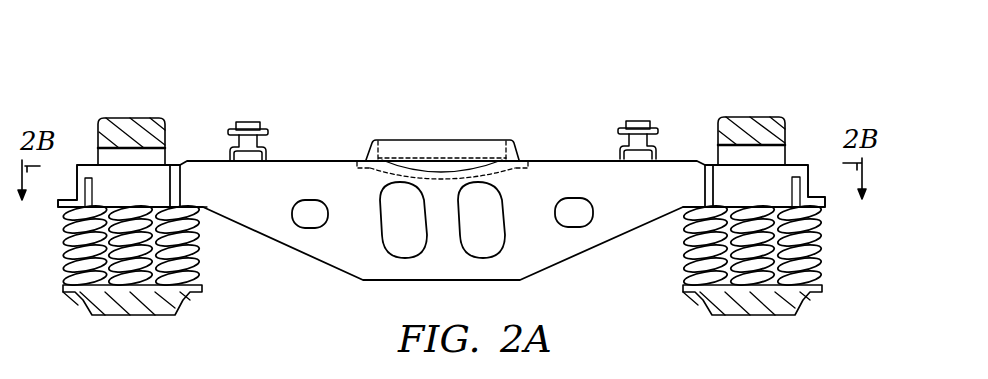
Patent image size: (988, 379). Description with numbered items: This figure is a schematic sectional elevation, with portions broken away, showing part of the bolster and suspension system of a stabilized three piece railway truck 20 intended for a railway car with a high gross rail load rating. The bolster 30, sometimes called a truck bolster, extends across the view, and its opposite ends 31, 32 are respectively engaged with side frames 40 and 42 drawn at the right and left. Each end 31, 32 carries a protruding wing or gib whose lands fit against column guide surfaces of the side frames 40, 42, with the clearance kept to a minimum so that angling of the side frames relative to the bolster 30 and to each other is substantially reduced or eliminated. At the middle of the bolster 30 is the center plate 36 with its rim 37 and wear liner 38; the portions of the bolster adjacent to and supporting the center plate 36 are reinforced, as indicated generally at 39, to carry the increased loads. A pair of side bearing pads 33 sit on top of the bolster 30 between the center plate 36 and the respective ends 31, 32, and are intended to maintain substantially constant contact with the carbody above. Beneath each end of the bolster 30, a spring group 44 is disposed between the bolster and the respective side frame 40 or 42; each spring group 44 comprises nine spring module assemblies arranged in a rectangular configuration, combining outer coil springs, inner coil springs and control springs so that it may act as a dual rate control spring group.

The truck 20 is at (423, 97).
The bolster 30 is at (561, 155).
The end of bolster 31 is at (797, 164).
The end of bolster 32 is at (72, 184).
The side bearing pad 33 is at (241, 122).
The center plate 36 is at (402, 154).
The rim 37 is at (514, 140).
The wear liner 38 is at (505, 157).
The reinforced portions 39 is at (376, 169).
The side frame 40 is at (750, 117).
The side frame 42 is at (133, 118).
The spring group 44 is at (208, 260).